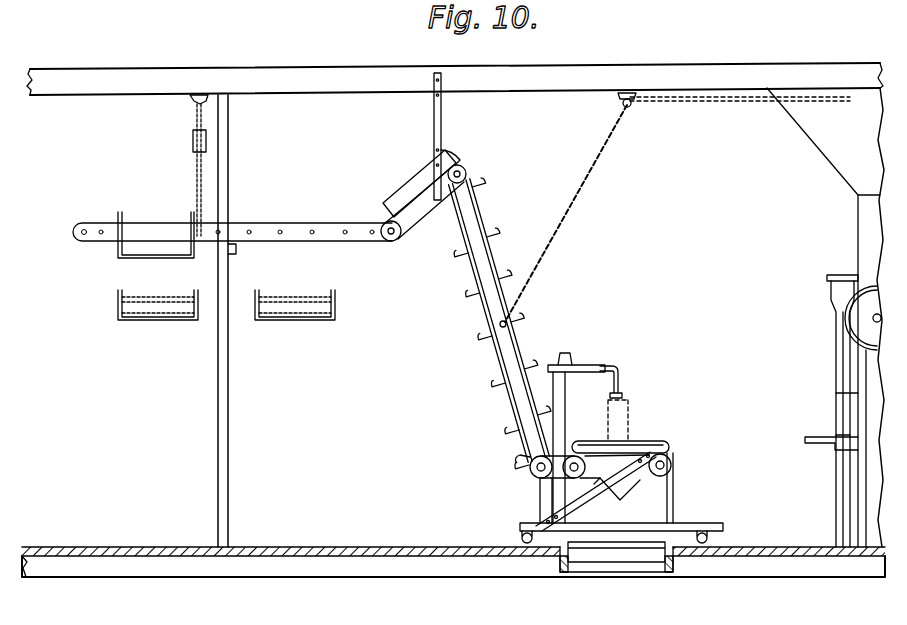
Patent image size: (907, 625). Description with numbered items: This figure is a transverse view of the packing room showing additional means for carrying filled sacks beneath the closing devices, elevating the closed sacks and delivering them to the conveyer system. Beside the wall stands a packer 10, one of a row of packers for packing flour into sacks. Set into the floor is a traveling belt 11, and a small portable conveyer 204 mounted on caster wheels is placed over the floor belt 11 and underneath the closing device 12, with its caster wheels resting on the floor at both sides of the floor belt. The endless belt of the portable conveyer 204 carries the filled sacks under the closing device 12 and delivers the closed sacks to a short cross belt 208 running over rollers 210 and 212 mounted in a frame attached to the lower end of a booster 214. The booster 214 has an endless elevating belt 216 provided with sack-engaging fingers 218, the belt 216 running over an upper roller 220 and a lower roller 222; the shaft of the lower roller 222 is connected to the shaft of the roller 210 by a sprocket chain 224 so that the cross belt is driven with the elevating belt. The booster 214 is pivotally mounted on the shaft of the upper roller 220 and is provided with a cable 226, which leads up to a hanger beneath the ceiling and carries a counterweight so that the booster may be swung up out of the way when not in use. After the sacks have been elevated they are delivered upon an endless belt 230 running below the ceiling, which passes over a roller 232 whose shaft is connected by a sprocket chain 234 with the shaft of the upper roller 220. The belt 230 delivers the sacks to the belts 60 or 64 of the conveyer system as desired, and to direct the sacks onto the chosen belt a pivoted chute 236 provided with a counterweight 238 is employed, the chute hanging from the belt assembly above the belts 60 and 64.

The packer 10 is at (860, 238).
The traveling belt 11 is at (607, 560).
The closing device 12 is at (576, 362).
The belt 60 is at (146, 322).
The belt 64 is at (293, 322).
The portable conveyer 204 is at (668, 443).
The cross belt 208 is at (622, 440).
The roller 210 is at (555, 479).
The roller 212 is at (672, 468).
The booster 214 is at (510, 352).
The elevating belt 216 is at (499, 323).
The sack-engaging finger 218 is at (478, 328).
The upper roller 220 is at (466, 172).
The lower roller 222 is at (529, 469).
The sprocket chain 224 is at (530, 455).
The cable 226 is at (577, 211).
The endless belt 230 is at (293, 222).
The roller 232 is at (389, 242).
The sprocket chain 234 is at (418, 224).
The pivoted chute 236 is at (118, 255).
The counterweight 238 is at (193, 148).